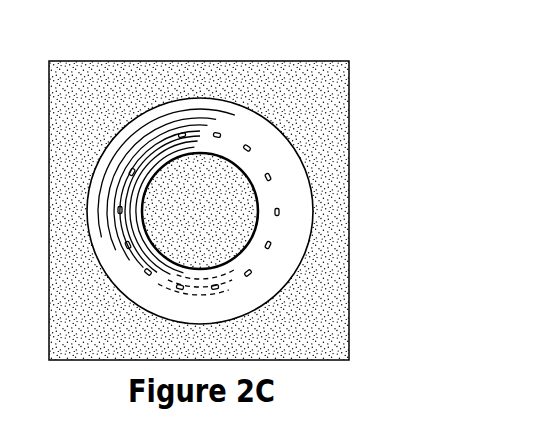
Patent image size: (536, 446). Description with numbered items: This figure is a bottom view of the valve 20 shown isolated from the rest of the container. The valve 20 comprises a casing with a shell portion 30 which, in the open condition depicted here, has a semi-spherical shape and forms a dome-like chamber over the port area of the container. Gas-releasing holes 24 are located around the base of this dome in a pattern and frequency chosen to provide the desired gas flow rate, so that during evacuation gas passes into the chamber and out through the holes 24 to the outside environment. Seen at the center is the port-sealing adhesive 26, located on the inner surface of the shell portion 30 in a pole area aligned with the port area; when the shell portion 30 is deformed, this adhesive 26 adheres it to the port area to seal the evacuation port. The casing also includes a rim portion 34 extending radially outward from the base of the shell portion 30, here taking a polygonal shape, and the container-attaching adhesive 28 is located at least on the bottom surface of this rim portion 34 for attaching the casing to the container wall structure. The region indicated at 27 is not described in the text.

The valve 20 is at (368, 171).
The gas-releasing holes 24 is at (252, 273).
The port-sealing adhesive 26 is at (196, 170).
The adhesive layer 27 is at (328, 103).
The container-attaching adhesive 28 is at (324, 328).
The shell portion 30 is at (258, 137).
The rim portion 34 is at (83, 90).